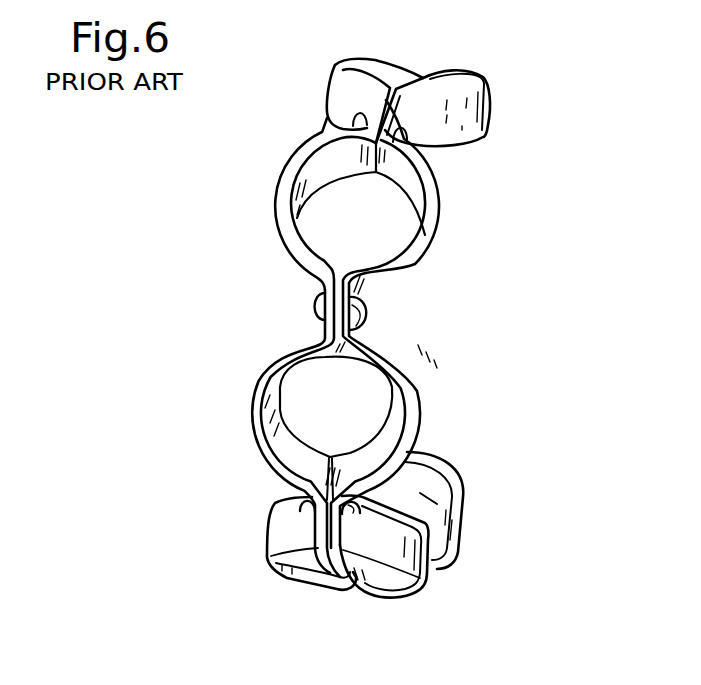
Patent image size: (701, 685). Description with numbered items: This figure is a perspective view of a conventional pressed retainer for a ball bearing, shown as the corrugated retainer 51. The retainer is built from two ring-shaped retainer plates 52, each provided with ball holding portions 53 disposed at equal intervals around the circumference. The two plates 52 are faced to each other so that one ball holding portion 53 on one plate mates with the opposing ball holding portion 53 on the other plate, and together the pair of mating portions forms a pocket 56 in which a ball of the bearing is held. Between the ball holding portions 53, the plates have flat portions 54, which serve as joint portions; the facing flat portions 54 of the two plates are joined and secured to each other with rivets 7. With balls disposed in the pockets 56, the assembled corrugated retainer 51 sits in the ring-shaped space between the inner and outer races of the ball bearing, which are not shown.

The corrugated retainer 51 is at (468, 62).
The ring-shaped retainer plate 52 is at (280, 243).
The ball holding portion 53 is at (340, 90).
The flat portion 54 is at (313, 310).
The pocket 56 is at (336, 202).
The rivet 7 is at (368, 298).